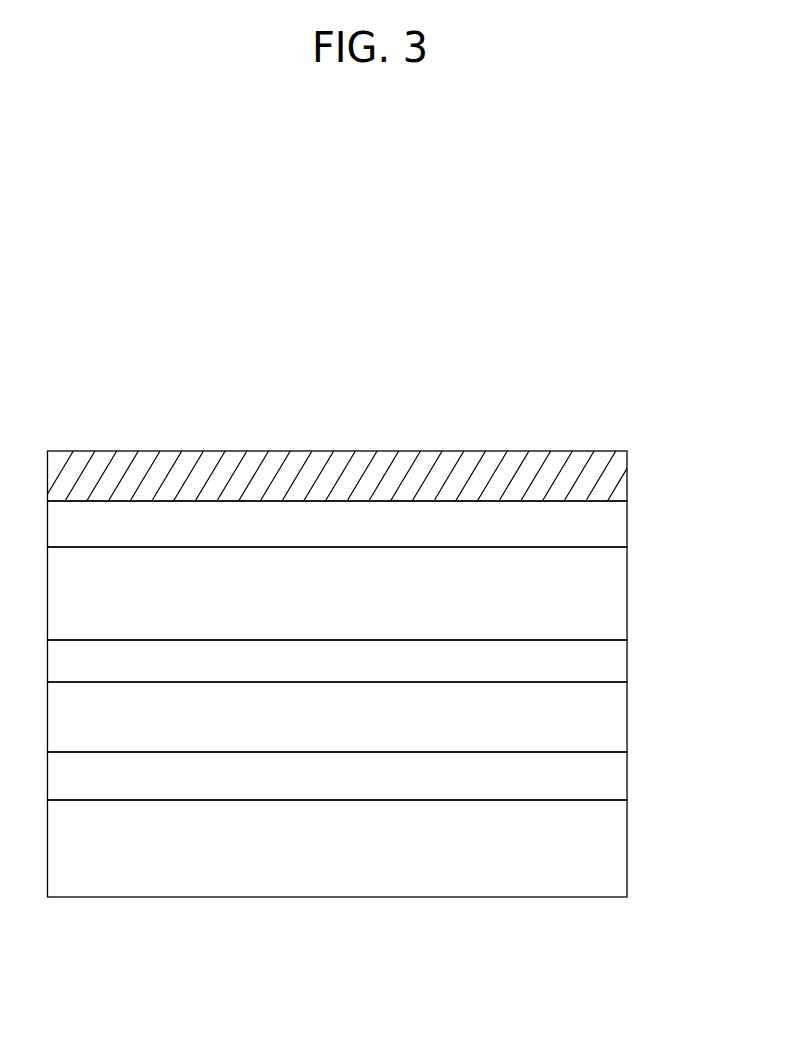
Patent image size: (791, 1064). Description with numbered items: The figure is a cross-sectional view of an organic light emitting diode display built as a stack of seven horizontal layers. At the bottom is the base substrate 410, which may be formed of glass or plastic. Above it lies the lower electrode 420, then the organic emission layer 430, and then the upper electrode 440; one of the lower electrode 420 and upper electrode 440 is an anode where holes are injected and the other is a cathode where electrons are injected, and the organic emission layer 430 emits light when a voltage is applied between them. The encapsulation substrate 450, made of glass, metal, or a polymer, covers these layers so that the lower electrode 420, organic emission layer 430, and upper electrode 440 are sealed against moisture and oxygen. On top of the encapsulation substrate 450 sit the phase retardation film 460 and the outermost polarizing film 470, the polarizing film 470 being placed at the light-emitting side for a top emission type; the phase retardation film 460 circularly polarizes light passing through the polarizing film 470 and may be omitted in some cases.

The base substrate 410 is at (627, 856).
The lower electrode 420 is at (627, 776).
The organic emission layer 430 is at (627, 718).
The upper electrode 440 is at (627, 662).
The encapsulation substrate 450 is at (627, 592).
The phase retardation film 460 is at (627, 526).
The polarizing film 470 is at (627, 480).